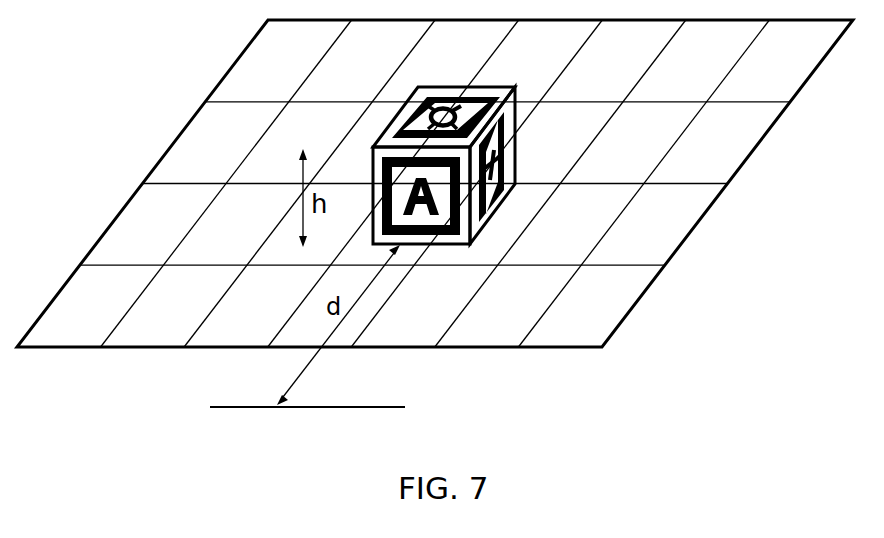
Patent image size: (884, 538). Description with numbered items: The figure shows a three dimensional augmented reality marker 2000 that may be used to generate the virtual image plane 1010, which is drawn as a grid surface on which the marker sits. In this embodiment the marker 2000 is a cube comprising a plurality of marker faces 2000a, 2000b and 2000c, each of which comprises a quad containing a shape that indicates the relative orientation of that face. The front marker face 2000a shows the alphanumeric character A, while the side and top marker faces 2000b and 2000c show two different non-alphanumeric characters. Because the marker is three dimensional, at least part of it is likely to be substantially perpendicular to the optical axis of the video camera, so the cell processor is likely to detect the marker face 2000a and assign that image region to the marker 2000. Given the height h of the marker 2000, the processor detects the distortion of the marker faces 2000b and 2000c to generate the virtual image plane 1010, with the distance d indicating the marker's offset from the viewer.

The virtual image plane 1010 is at (781, 70).
The three dimensional augmented reality marker 2000 is at (510, 87).
The marker face 2000a is at (437, 241).
The marker face 2000b is at (510, 163).
The marker face 2000c is at (441, 93).